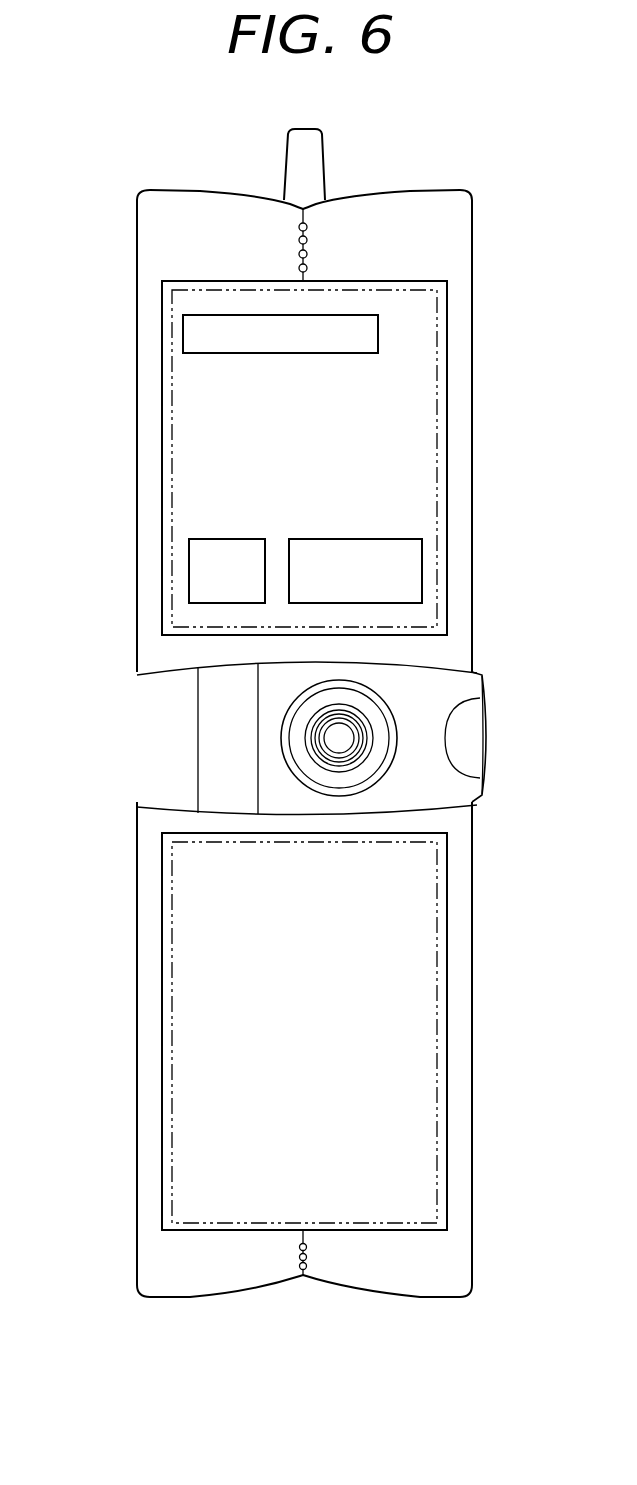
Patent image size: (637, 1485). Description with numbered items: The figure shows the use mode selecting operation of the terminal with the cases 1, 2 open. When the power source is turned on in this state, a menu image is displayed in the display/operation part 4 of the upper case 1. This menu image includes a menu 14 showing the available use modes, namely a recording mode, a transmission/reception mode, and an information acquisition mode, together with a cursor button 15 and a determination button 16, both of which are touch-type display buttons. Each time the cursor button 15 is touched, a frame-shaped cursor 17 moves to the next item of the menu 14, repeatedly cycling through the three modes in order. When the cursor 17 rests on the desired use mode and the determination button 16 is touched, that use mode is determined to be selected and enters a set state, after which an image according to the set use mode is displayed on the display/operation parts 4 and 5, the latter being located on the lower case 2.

The upper case 1 is at (450, 243).
The case 2 is at (432, 1263).
The display/operation part 4 is at (425, 412).
The display/operation part 5 is at (405, 966).
The menu 14 is at (190, 390).
The cursor button 15 is at (189, 572).
The determination button 16 is at (422, 573).
The cursor 17 is at (378, 339).